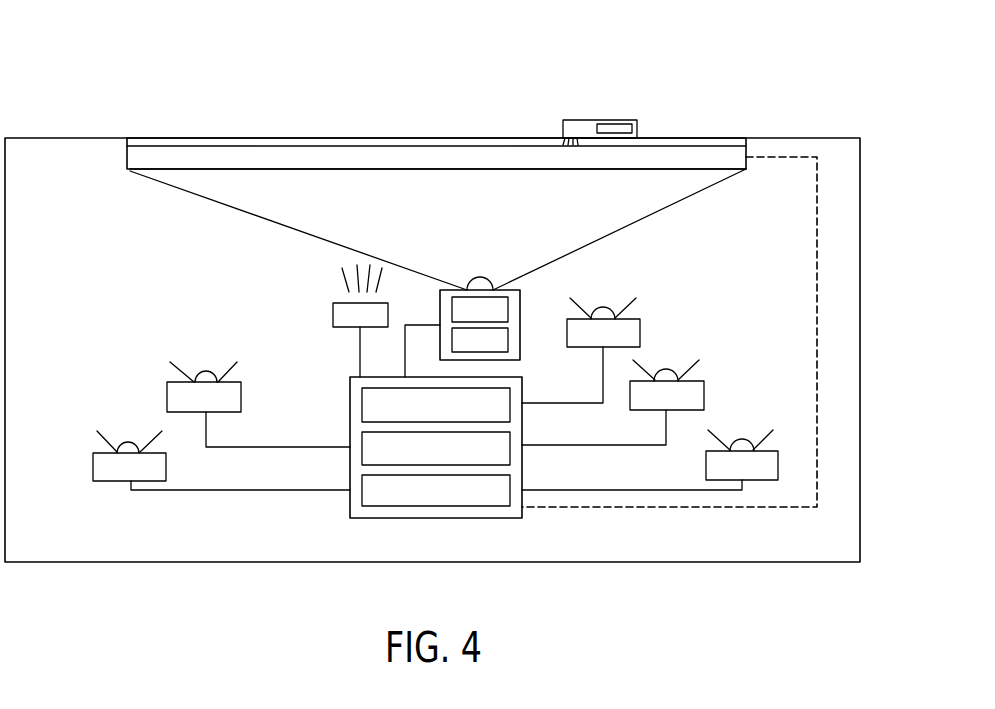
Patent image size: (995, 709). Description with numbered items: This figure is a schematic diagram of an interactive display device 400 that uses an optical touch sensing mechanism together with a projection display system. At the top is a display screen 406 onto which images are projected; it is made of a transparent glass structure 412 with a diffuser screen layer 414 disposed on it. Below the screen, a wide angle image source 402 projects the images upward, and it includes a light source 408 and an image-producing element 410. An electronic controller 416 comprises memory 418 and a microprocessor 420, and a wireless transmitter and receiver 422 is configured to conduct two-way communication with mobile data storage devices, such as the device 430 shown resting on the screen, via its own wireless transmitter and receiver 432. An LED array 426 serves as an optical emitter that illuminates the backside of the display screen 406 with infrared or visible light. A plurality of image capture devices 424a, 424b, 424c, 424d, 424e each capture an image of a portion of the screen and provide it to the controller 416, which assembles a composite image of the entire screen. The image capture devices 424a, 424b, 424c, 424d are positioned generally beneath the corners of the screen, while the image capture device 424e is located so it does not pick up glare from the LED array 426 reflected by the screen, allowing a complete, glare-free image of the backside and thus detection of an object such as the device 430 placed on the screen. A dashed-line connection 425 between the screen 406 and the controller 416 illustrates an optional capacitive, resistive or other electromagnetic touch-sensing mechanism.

The interactive display device 400 is at (82, 74).
The wide angle image source 402 is at (520, 306).
The display screen 406 is at (175, 136).
The light source 408 is at (508, 340).
The image-producing element 410 is at (452, 307).
The transparent glass structure 412 is at (250, 158).
The diffuser screen layer 414 is at (313, 140).
The electronic controller 416 is at (350, 514).
The memory 418 is at (362, 400).
The microprocessor 420 is at (510, 445).
The wireless transmitter and receiver 422 is at (508, 487).
The image capture device 424a is at (107, 472).
The image capture device 424b is at (177, 398).
The image capture device 424c is at (693, 396).
The image capture device 424d is at (765, 470).
The image capture device 424e is at (632, 333).
The dashed-line connection 425 is at (817, 337).
The LED array 426 is at (333, 312).
The mobile data storage device 430 is at (577, 128).
The wireless transmitter and receiver 432 is at (615, 128).